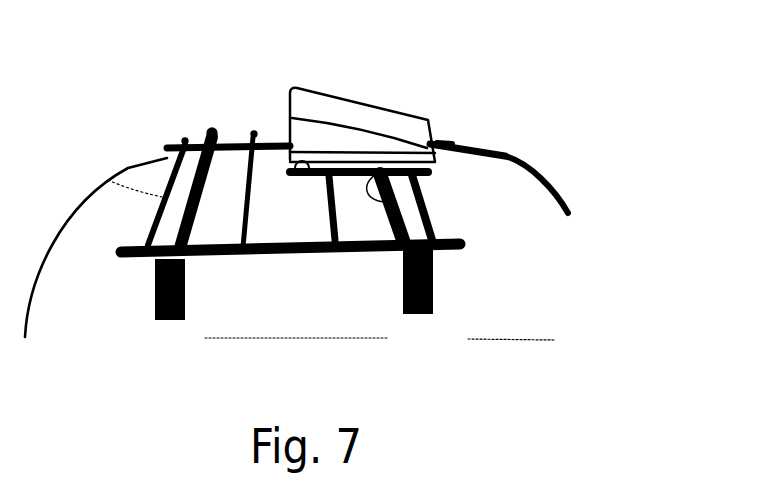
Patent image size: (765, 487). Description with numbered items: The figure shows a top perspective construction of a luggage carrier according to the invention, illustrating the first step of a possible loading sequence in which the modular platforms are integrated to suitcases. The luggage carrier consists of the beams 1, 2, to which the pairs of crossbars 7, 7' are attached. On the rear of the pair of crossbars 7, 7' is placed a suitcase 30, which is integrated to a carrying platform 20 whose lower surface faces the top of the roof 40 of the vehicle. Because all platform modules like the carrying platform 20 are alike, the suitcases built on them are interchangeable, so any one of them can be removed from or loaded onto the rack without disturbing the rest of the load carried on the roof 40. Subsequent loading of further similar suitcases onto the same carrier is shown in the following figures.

The beam 1 is at (367, 245).
The beam 2 is at (238, 144).
The crossbar 7 is at (197, 246).
The crossbar 7' is at (358, 258).
The carrying platform 20 is at (435, 212).
The suitcase 30 is at (377, 117).
The roof 40 is at (488, 247).